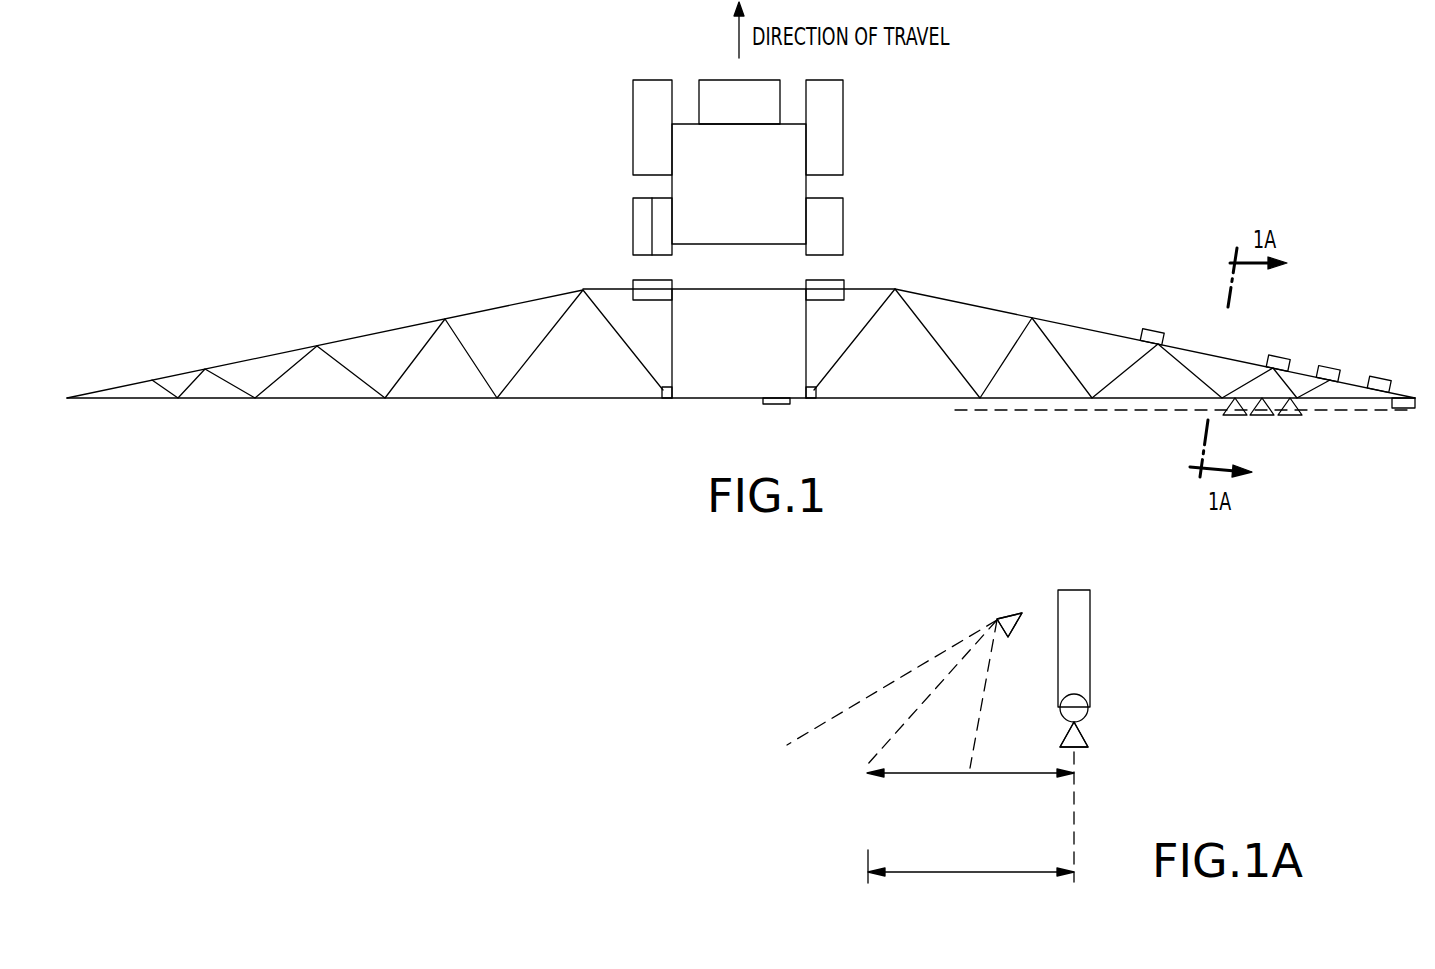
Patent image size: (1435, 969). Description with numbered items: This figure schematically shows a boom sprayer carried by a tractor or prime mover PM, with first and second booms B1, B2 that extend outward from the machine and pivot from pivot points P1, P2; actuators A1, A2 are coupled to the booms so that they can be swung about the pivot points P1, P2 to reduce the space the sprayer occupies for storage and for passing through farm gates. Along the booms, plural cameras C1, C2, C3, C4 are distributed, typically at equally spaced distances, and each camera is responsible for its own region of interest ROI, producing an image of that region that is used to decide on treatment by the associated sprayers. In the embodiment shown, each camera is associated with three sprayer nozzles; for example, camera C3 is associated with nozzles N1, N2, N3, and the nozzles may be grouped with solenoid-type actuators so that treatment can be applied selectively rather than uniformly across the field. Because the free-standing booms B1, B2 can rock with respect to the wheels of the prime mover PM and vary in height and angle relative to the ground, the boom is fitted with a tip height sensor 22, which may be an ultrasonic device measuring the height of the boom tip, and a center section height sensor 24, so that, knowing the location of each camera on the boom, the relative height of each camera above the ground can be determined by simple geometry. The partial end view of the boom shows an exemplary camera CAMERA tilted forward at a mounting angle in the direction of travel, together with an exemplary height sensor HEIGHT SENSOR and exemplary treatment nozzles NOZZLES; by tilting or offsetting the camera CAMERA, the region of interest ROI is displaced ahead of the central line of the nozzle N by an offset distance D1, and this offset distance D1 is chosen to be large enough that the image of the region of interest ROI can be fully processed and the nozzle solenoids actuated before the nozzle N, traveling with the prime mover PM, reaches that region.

In FIG. 1, the prime mover PM is at (843, 210).
In FIG. 1, the actuator A1 is at (843, 285).
In FIG. 1, the actuator A2 is at (632, 282).
In FIG. 1, the first boom B1 is at (987, 309).
In FIG. 1A, the first boom B1 is at (1090, 642).
In FIG. 1, the second boom B2 is at (388, 330).
In FIG. 1, the camera C1 is at (1380, 376).
In FIG. 1, the camera C2 is at (1326, 365).
In FIG. 1A, the camera C3 is at (995, 618).
In FIG. 1, the camera C4 is at (1152, 326).
In FIG. 1, the camera CAMERA is at (1278, 356).
In FIG. 1A, the camera CAMERA is at (1012, 612).
In FIG. 1, the tip height sensor 22 is at (1411, 410).
In FIG. 1, the center section height sensor 24 is at (771, 405).
In FIG. 1, the pivot point P1 is at (813, 400).
In FIG. 1, the pivot point P2 is at (664, 400).
In FIG. 1, the nozzle N1 is at (1233, 428).
In FIG. 1, the nozzle N2 is at (1262, 428).
In FIG. 1, the nozzle N3 is at (1291, 428).
In FIG. 1A, the nozzle N is at (1078, 752).
In FIG. 1A, the height sensor HEIGHT SENSOR is at (1090, 708).
In FIG. 1A, the treatment nozzles NOZZLES is at (1086, 736).
In FIG. 1A, the region of interest ROI is at (892, 723).
In FIG. 1A, the offset distance D1 is at (971, 880).